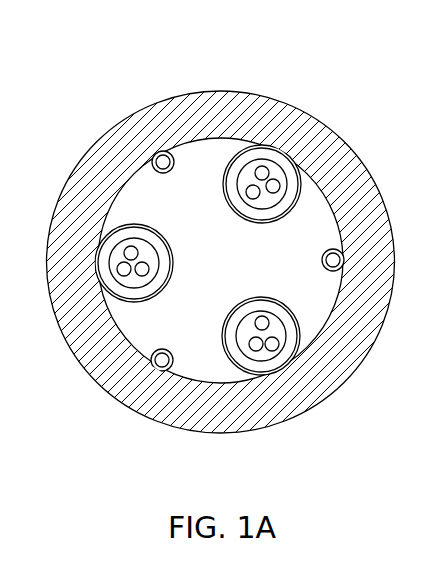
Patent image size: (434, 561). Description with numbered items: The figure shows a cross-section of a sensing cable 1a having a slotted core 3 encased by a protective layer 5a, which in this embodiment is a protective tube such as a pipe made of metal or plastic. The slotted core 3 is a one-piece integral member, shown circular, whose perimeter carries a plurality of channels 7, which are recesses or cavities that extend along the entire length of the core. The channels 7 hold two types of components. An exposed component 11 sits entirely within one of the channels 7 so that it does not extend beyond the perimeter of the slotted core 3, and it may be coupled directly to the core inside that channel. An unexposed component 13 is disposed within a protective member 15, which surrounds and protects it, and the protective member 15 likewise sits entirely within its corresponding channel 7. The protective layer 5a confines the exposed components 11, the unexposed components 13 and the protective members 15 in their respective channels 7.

The sensing cable 1a is at (376, 66).
The slotted core 3 is at (136, 190).
The protective layer 5a is at (198, 410).
The channels 7 is at (180, 152).
The exposed component 11 is at (167, 150).
The unexposed component 13 is at (117, 278).
The protective member 15 is at (105, 263).